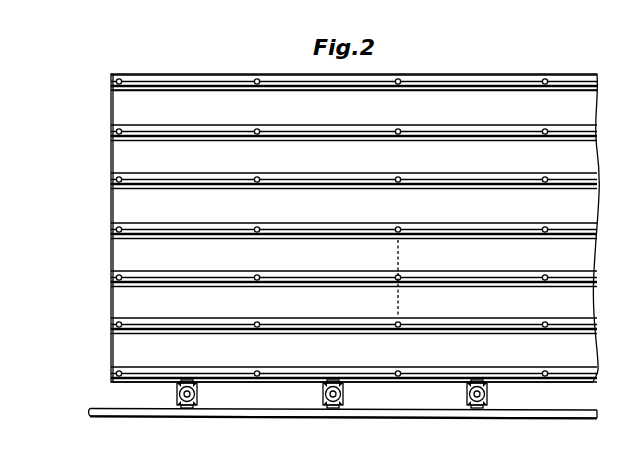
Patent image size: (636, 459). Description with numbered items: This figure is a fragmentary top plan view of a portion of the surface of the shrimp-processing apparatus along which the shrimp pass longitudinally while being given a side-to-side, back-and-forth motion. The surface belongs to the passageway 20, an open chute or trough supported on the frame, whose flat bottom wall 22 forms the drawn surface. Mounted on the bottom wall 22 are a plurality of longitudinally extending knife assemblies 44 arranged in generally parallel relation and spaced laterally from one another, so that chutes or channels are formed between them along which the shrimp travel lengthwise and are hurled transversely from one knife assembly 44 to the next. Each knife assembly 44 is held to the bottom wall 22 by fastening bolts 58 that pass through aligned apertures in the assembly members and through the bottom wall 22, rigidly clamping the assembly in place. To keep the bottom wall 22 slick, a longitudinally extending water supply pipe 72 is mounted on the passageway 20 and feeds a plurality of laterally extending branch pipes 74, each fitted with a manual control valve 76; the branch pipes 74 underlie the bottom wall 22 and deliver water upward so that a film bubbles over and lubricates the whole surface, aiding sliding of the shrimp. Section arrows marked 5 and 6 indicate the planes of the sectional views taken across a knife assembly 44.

The passageway 20 is at (158, 68).
The bottom wall 22 is at (122, 105).
The knife assemblies 44 is at (310, 132).
The fastening bolt 58 is at (400, 182).
The manual control valve 76 is at (198, 393).
The branch pipes 74 is at (190, 405).
The water supply pipe 72 is at (387, 412).
The section view 5 arrows 5 is at (158, 305).
The section view 6 arrows 6 is at (418, 253).